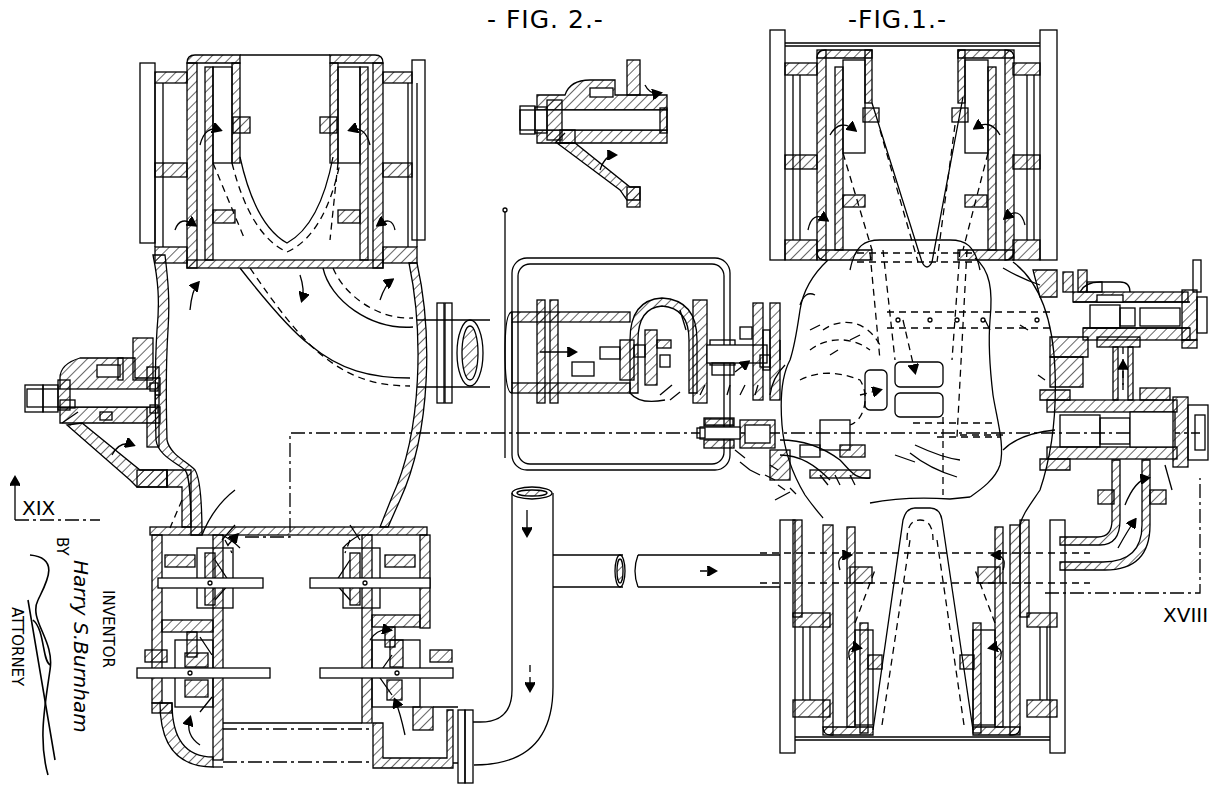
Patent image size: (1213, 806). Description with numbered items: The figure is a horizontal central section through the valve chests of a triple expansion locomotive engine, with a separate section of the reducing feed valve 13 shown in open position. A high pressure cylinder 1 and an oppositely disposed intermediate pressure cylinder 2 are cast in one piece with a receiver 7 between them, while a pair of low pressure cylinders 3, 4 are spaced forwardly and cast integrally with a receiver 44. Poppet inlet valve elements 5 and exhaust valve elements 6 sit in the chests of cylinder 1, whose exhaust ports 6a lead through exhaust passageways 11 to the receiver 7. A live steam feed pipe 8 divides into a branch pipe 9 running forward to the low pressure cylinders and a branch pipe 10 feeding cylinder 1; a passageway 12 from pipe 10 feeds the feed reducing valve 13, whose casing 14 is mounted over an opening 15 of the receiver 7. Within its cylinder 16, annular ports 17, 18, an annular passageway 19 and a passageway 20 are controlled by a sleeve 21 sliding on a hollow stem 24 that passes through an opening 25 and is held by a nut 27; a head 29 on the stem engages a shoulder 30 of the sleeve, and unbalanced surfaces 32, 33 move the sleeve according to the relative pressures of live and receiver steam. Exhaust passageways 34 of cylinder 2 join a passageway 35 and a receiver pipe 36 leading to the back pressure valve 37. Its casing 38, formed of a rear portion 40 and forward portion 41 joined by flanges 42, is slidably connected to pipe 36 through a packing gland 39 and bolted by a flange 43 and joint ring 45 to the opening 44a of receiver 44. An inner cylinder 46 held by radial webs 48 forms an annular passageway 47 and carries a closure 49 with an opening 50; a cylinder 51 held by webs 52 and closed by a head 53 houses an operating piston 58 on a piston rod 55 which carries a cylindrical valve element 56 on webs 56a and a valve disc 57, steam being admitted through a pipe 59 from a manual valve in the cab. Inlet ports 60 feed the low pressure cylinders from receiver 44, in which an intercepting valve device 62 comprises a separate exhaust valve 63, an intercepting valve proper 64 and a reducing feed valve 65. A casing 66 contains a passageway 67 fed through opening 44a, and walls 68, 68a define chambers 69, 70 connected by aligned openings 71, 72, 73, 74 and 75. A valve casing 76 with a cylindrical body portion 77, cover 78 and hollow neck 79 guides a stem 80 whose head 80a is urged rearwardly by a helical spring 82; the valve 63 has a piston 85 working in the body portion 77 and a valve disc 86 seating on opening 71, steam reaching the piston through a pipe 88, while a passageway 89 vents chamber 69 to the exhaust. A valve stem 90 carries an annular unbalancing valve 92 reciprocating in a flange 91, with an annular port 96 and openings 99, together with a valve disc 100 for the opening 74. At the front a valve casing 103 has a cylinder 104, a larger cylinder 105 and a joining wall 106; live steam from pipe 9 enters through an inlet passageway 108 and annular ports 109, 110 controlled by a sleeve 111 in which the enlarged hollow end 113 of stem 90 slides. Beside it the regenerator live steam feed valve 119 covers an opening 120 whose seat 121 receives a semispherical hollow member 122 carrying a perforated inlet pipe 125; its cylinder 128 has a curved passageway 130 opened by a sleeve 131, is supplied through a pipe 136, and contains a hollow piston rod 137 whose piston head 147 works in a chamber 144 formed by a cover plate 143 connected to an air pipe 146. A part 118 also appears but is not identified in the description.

In FIG. 2, the high pressure cylinder 1 is at (435, 600).
In FIG. 2, the intermediate pressure cylinder 2 is at (422, 103).
In FIG. 1, the low pressure cylinder 3 is at (1068, 660).
In FIG. 1, the low pressure cylinder 4 is at (1053, 203).
In FIG. 2, the inlet valve elements 5 is at (420, 665).
In FIG. 2, the exhaust valve elements 6 is at (395, 556).
In FIG. 2, the exhaust ports 6a is at (233, 545).
In FIG. 2, the receiver 7 is at (722, 474).
In FIG. 2, the live steam feed pipe 8 is at (554, 520).
In FIG. 1, the branch pipe 9 is at (690, 563).
In FIG. 2, the branch pipe 10 is at (310, 770).
In FIG. 2, the exhaust passageway 11 is at (225, 522).
In FIG. 2, the passageway 12 is at (162, 518).
In FIG. 2, the feed reducing valve 13 is at (95, 360).
In FIG. 2, the body or casing 14 is at (90, 445).
In FIG. 2, the opening 15 is at (167, 372).
In FIG. 2, the cylinder 16 is at (66, 380).
In FIG. 2, the annular port 17 is at (120, 365).
In FIG. 2, the annular port 18 is at (143, 345).
In FIG. 2, the annular passageway 19 is at (103, 365).
In FIG. 2, the passageway 20 is at (132, 480).
In FIG. 2, the sleeve 21 is at (66, 415).
In FIG. 2, the hollow stem 24 is at (70, 425).
In FIG. 2, the opening 25 is at (48, 385).
In FIG. 2, the nut 27 is at (33, 412).
In FIG. 2, the head 29 is at (160, 397).
In FIG. 2, the shoulder 30 is at (163, 410).
In FIG. 2, the unbalanced surface 32 is at (110, 420).
In FIG. 2, the unbalanced surfaces 33 is at (163, 387).
In FIG. 2, the exhaust passageways 34 is at (343, 77).
In FIG. 2, the passageway 35 is at (298, 338).
In FIG. 2, the receiver pipe 36 is at (470, 320).
In FIG. 1, the back pressure valve 37 is at (647, 306).
In FIG. 1, the outer cylindrical casing 38 is at (632, 313).
In FIG. 1, the packing gland 39 is at (541, 300).
In FIG. 1, the rear portion 40 is at (665, 402).
In FIG. 1, the forward portion 41 is at (737, 393).
In FIG. 1, the circumferential flanges 42 is at (708, 292).
In FIG. 1, the circumferential flange 43 is at (753, 315).
In FIG. 1, the receiver 44 is at (926, 372).
In FIG. 1, the opening 44a is at (772, 305).
In FIG. 1, the joint ring 45 is at (786, 342).
In FIG. 1, the inner cylinder 46 is at (640, 397).
In FIG. 1, the annular passageway 47 is at (650, 397).
In FIG. 1, the radial webs 48 is at (686, 300).
In FIG. 1, the closure 49 is at (700, 397).
In FIG. 1, the opening 50 is at (717, 318).
In FIG. 1, the cylinder 51 is at (752, 330).
In FIG. 1, the webs 52 is at (727, 377).
In FIG. 1, the head 53 is at (774, 361).
In FIG. 1, the piston rod 55 is at (683, 352).
In FIG. 1, the cylindrical valve element 56 is at (628, 360).
In FIG. 1, the webs 56a is at (620, 362).
In FIG. 1, the valve disc 57 is at (682, 365).
In FIG. 1, the operating piston 58 is at (653, 358).
In FIG. 1, the pipe 59 is at (508, 250).
In FIG. 1, the inlet ports 60 is at (825, 312).
In FIG. 1, the intercepting valve device 62 is at (945, 475).
In FIG. 1, the separate exhaust valve 63 is at (765, 477).
In FIG. 1, the intercepting valve proper 64 is at (950, 460).
In FIG. 1, the reducing feed valve 65 is at (1150, 522).
In FIG. 1, the casing 66 is at (816, 308).
In FIG. 1, the passageway 67 is at (815, 336).
In FIG. 1, the wall 68 is at (785, 493).
In FIG. 1, the wall 68a is at (856, 345).
In FIG. 1, the chamber 69 is at (762, 473).
In FIG. 1, the chamber 70 is at (832, 353).
In FIG. 1, the opening 71 is at (771, 498).
In FIG. 1, the opening 72 is at (859, 490).
In FIG. 1, the opening 73 is at (750, 472).
In FIG. 1, the opening 74 is at (867, 458).
In FIG. 1, the opening 75 is at (1040, 478).
In FIG. 1, the valve casing 76 is at (740, 463).
In FIG. 1, the cylindrical body portion 77 is at (749, 398).
In FIG. 1, the cover 78 is at (735, 452).
In FIG. 1, the hollow neck 79 is at (727, 398).
In FIG. 1, the stem 80 is at (700, 440).
In FIG. 1, the head 80a is at (703, 424).
In FIG. 1, the helical spring 82 is at (697, 433).
In FIG. 1, the piston 85 is at (764, 434).
In FIG. 1, the valve disc 86 is at (817, 458).
In FIG. 1, the pipe 88 is at (665, 472).
In FIG. 1, the passageway 89 is at (943, 378).
In FIG. 1, the valve stem 90 is at (1005, 433).
In FIG. 1, the annular flange 91 is at (842, 486).
In FIG. 1, the annular unbalancing valve 92 is at (775, 502).
In FIG. 1, the annular port 96 is at (825, 490).
In FIG. 1, the openings 99 is at (850, 440).
In FIG. 1, the valve disc 100 is at (912, 462).
In FIG. 1, the valve casing 103 is at (1130, 386).
In FIG. 1, the cylinder or body portion 104 is at (1150, 447).
In FIG. 1, the cylinder 105 is at (1185, 470).
In FIG. 1, the wall 106 is at (1150, 500).
In FIG. 1, the inlet passageway 108 is at (1108, 504).
In FIG. 1, the annular port 109 is at (1090, 431).
In FIG. 1, the annular port 110 is at (1122, 432).
In FIG. 1, the sleeve 111 is at (1046, 367).
In FIG. 1, the enlarged hollow end 113 is at (1148, 396).
In FIG. 1, the washer 118 is at (1170, 492).
In FIG. 1, the regenerator live steam feed valve 119 is at (1142, 295).
In FIG. 1, the opening 120 is at (985, 325).
In FIG. 1, the seat 121 is at (1068, 272).
In FIG. 1, the semispherical hollow member 122 is at (1084, 270).
In FIG. 1, the inlet pipe 125 is at (1032, 336).
In FIG. 1, the cylinder 128 is at (1185, 290).
In FIG. 1, the curved passageway 130 is at (1094, 282).
In FIG. 1, the sleeve 131 is at (1147, 313).
In FIG. 1, the pipe 136 is at (1148, 388).
In FIG. 1, the hollow piston rod 137 is at (1120, 315).
In FIG. 1, the cover plate 143 is at (1202, 285).
In FIG. 1, the chamber 144 is at (1192, 305).
In FIG. 1, the air pipe 146 is at (1196, 260).
In FIG. 1, the piston head 147 is at (1168, 315).